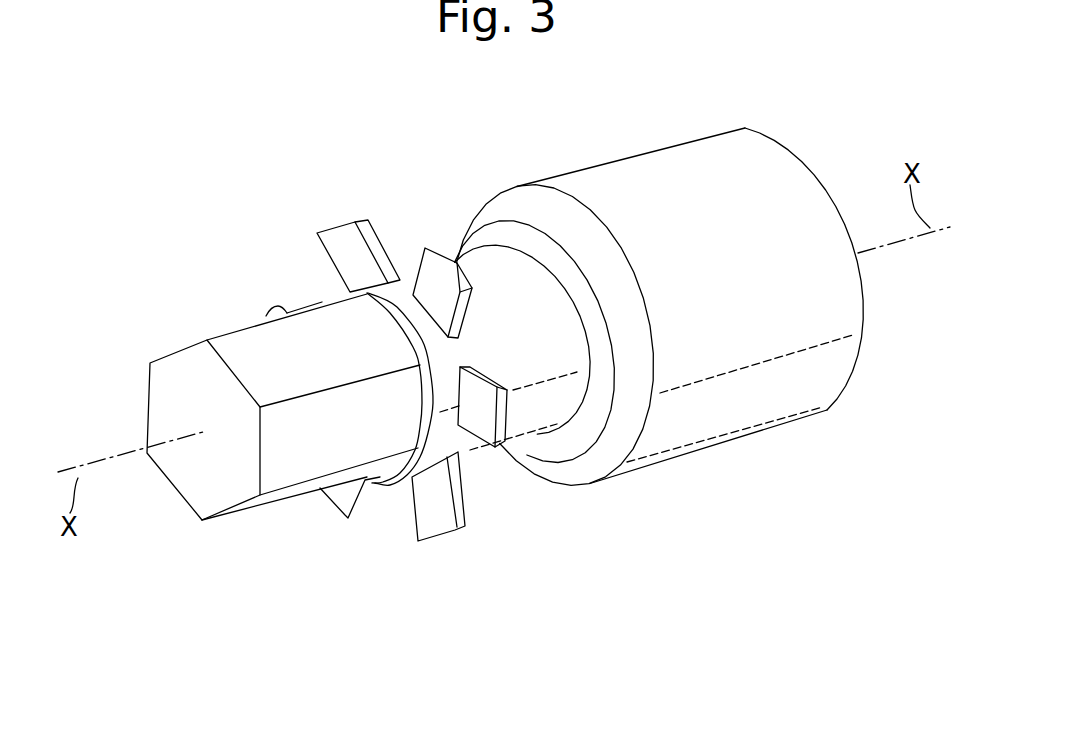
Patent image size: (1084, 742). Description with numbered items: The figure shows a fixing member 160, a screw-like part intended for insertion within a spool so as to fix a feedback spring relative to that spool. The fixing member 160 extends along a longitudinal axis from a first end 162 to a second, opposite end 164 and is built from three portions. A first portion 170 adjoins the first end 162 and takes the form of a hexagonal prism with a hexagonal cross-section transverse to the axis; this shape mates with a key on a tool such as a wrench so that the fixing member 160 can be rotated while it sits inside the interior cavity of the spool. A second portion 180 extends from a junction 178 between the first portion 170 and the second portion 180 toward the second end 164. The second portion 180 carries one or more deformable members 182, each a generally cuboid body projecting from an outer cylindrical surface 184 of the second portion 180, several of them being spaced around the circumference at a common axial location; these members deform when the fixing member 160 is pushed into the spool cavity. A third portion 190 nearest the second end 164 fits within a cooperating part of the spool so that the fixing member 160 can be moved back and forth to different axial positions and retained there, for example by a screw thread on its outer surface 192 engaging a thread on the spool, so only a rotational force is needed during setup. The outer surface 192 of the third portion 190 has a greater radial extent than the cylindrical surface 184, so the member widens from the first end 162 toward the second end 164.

The fixing member 160 is at (140, 222).
The first end 162 is at (165, 380).
The second end 164 is at (863, 293).
The first portion 170 is at (303, 435).
The junction 178 is at (390, 478).
The second portion 180 is at (333, 233).
The deformable members 182 is at (365, 217).
The outer cylindrical surface 184 is at (510, 263).
The third portion 190 is at (685, 185).
The outer surface 192 is at (730, 417).